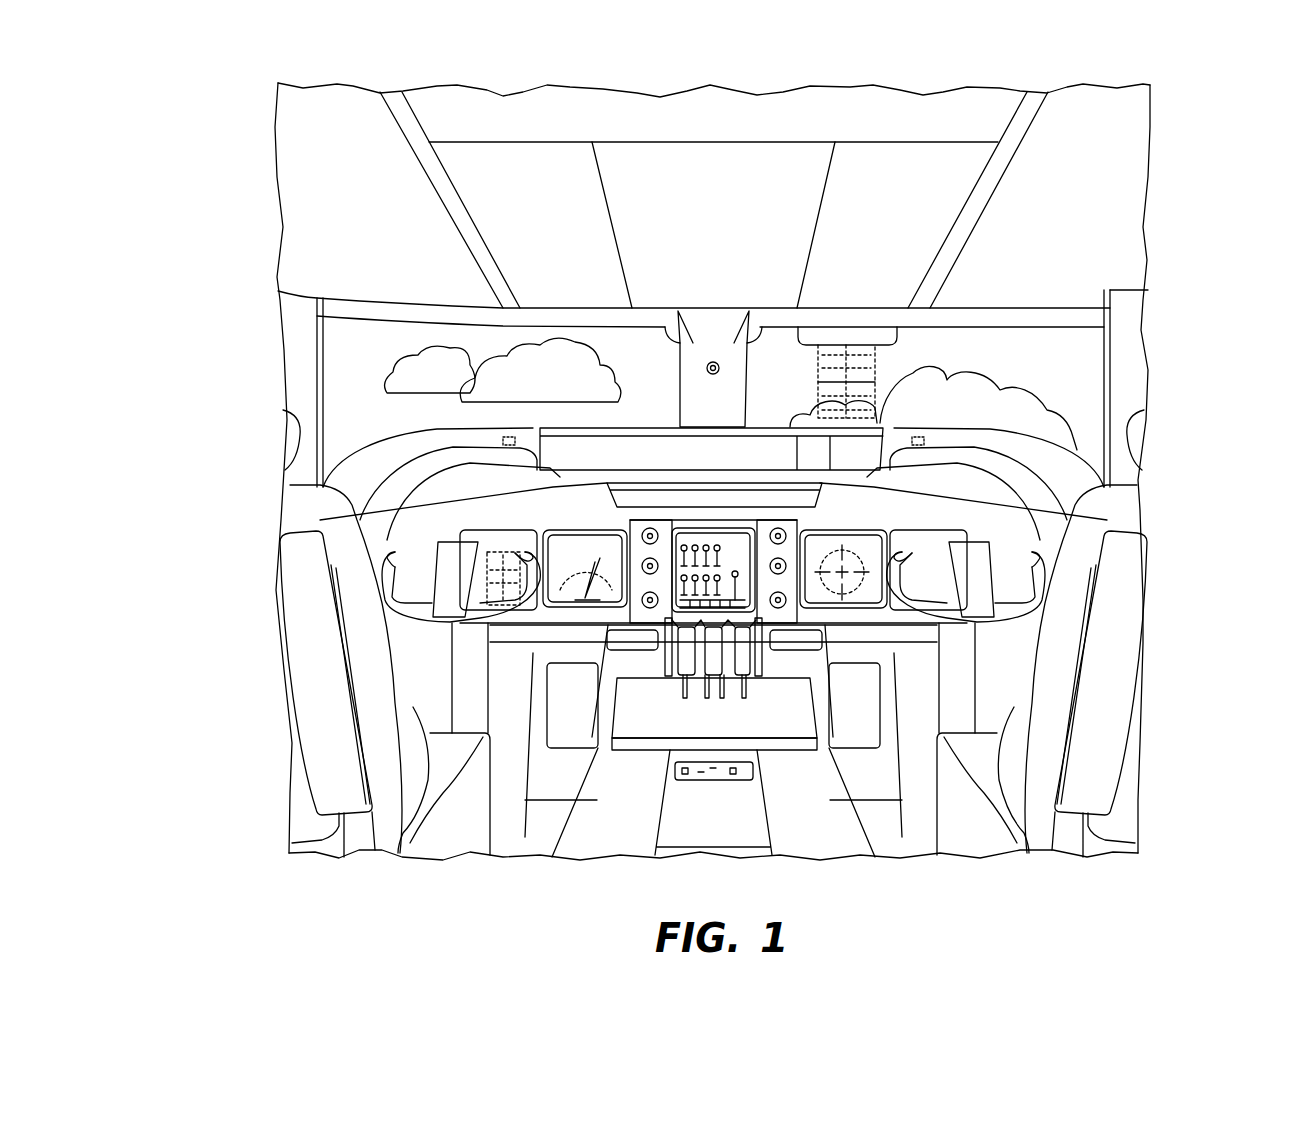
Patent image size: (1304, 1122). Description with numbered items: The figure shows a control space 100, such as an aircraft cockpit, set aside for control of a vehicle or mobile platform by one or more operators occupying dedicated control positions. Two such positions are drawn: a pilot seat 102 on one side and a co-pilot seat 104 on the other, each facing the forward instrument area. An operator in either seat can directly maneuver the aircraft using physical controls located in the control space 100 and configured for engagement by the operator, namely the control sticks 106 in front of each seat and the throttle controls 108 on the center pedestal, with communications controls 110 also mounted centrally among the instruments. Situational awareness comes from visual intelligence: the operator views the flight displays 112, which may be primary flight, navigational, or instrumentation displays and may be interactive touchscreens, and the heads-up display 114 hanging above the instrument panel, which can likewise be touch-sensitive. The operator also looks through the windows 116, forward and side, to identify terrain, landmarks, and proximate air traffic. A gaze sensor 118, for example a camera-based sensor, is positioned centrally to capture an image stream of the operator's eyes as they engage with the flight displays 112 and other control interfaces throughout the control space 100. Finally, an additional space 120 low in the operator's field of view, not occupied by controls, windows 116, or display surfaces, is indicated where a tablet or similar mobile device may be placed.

The control space 100 is at (108, 119).
The pilot seat 102 is at (390, 739).
The co-pilot seat 104 is at (1073, 773).
The control sticks 106 is at (457, 583).
The throttle controls 108 is at (740, 652).
The communications controls 110 is at (733, 555).
The flight displays 112 is at (592, 570).
The heads-up display 114 is at (867, 365).
The windows 116 is at (393, 403).
The gaze sensor 118 is at (719, 366).
The space 120 is at (992, 715).